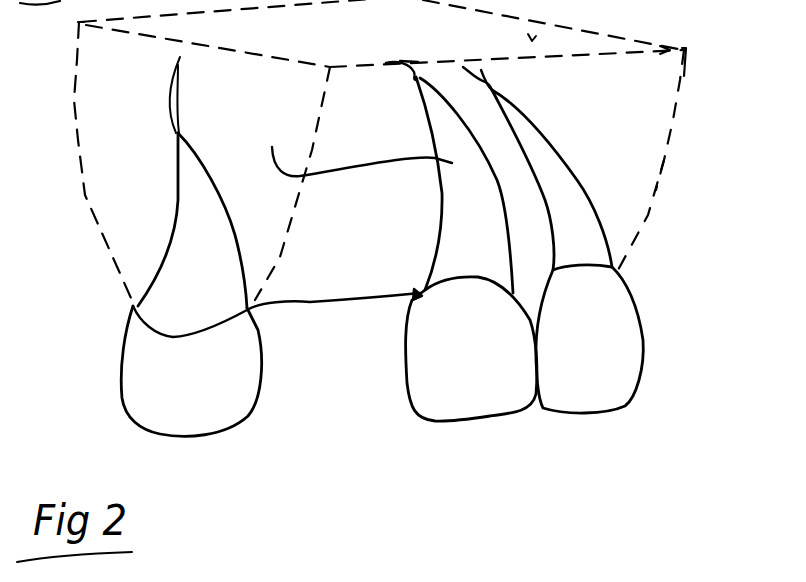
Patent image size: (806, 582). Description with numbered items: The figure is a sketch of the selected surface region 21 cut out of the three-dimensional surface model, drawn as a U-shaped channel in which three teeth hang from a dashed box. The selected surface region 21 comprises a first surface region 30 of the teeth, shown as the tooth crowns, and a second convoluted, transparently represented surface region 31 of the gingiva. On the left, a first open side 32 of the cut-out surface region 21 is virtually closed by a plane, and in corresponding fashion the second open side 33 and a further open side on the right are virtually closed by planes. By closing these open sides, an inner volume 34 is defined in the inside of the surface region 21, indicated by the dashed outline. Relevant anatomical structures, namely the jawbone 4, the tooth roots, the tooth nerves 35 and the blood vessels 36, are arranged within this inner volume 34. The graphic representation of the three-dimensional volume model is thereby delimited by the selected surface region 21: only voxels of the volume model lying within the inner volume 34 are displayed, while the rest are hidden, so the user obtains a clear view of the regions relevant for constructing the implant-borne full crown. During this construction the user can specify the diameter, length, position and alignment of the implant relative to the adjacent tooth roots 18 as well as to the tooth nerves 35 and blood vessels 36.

The jawbone 4 is at (107, 108).
The adjacent tooth roots 18 is at (209, 223).
The selected surface region 21 is at (684, 73).
The first surface region of the teeth 30 is at (231, 408).
The second surface region of the gingiva 31 is at (667, 150).
The first open side 32 is at (130, 180).
The second open side 33 is at (532, 41).
The inner volume 34 is at (679, 104).
The tooth nerves 35 is at (167, 97).
The blood vessels 36 is at (181, 97).